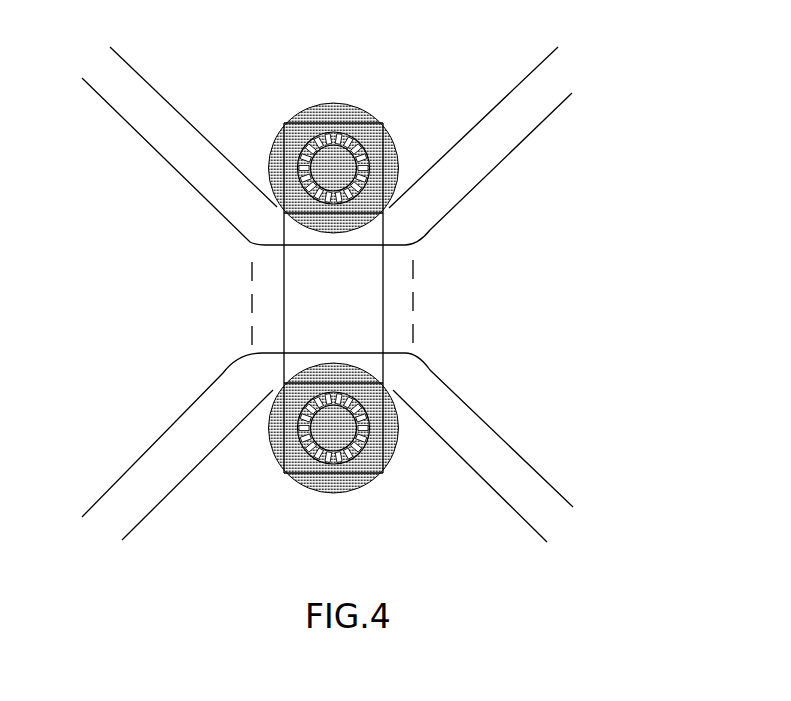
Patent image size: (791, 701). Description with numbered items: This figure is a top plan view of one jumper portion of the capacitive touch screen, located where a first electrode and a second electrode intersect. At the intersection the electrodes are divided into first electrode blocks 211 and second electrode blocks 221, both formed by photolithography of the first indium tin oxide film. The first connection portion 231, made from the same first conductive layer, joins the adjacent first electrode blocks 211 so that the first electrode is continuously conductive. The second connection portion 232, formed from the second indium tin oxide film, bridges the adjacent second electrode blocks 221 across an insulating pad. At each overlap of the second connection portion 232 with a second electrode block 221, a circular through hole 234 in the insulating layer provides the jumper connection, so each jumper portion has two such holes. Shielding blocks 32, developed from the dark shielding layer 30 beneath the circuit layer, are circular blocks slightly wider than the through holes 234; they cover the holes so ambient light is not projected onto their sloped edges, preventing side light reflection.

The first electrode blocks 211 is at (478, 190).
The second electrode blocks 221 is at (463, 137).
The first connection portion 231 is at (272, 292).
The second connection portion 232 is at (383, 308).
The through hole 234 is at (316, 123).
The shielding block 32 is at (353, 107).
The shielding layer 30 is at (304, 280).